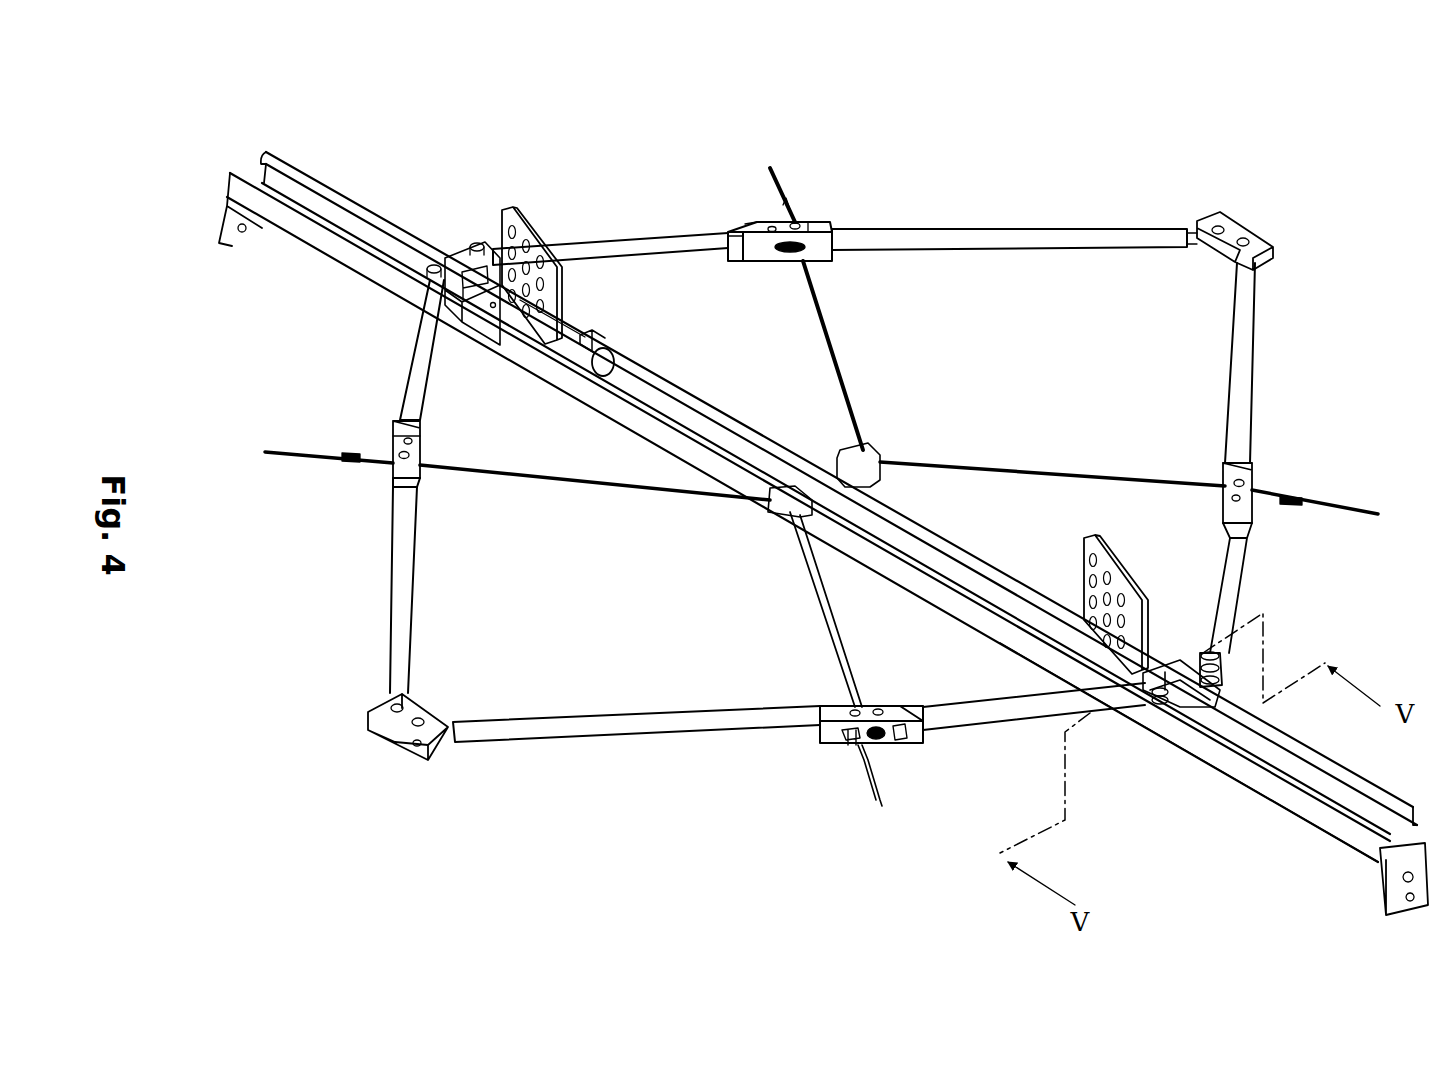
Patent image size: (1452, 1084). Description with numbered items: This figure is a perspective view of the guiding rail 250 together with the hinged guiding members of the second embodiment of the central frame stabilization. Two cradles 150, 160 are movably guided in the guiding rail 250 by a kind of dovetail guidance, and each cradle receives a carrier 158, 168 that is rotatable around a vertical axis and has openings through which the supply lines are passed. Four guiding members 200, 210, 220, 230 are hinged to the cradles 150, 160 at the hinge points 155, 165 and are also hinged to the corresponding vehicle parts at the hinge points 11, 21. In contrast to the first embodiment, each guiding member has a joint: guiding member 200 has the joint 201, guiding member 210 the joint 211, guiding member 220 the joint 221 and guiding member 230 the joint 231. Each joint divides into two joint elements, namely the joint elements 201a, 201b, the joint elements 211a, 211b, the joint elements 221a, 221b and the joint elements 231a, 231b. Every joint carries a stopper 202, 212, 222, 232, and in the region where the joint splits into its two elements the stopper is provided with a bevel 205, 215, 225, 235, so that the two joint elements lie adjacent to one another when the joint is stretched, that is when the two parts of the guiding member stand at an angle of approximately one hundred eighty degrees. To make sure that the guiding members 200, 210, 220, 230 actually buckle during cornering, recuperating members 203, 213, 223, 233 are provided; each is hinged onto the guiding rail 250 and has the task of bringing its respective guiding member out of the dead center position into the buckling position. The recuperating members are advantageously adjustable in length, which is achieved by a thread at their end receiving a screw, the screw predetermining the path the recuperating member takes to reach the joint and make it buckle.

The guiding rail 250 is at (323, 210).
The hinge point on cradle 165 is at (476, 240).
The carrier 168 is at (512, 212).
The stopper 202 is at (748, 224).
The bevel 205 is at (765, 215).
The joint element 201a is at (808, 222).
The joint 201 is at (830, 232).
The joint element 201b is at (728, 234).
The guiding member 200 is at (1038, 230).
The hinge point on vehicle part 11 is at (1226, 214).
The recuperating member 203 is at (822, 338).
The guiding member 210 is at (1240, 350).
The joint element 211a is at (1226, 468).
The joint 211 is at (1252, 470).
The recuperating member 213 is at (885, 465).
The guiding member 220 is at (430, 345).
The bevel 225 is at (395, 436).
The joint element 221b is at (400, 423).
The stopper 222 is at (392, 445).
The joint 221 is at (392, 460).
The joint element 221a is at (387, 478).
The cradle 160 is at (525, 322).
The recuperating member 223 is at (590, 488).
The recuperating member 233 is at (822, 632).
The joint element 231a is at (820, 708).
The joint element 231b is at (908, 712).
The bevel 235 is at (905, 725).
The hinge point on vehicle part 21 is at (412, 760).
The guiding member 230 is at (693, 733).
The stopper 232 is at (898, 737).
The joint 231 is at (908, 730).
The cradle 150 is at (1087, 655).
The carrier 158 is at (1150, 690).
The hinge point on cradle 155 is at (1178, 713).
The stopper 212 is at (1252, 500).
The bevel 215 is at (1252, 518).
The joint element 211b is at (1225, 518).